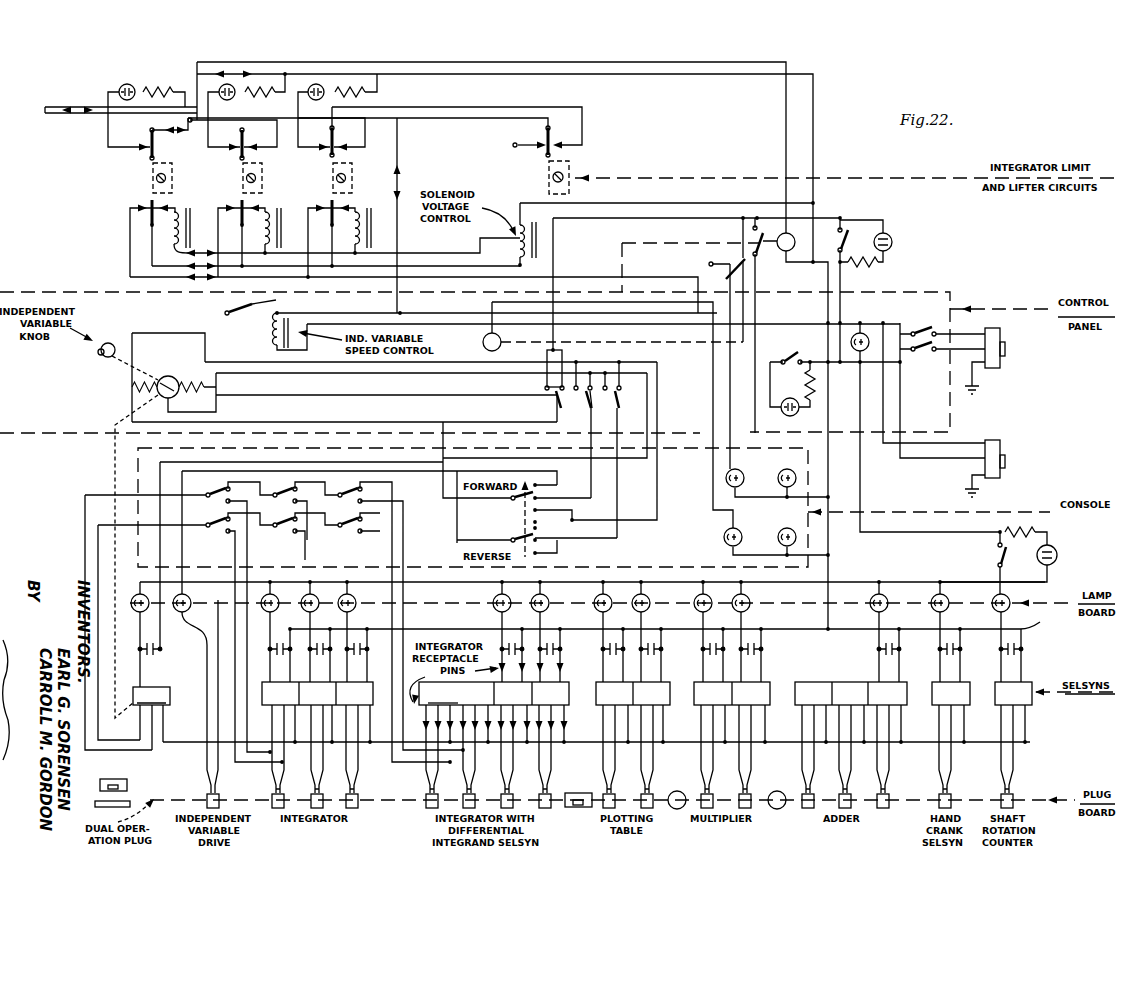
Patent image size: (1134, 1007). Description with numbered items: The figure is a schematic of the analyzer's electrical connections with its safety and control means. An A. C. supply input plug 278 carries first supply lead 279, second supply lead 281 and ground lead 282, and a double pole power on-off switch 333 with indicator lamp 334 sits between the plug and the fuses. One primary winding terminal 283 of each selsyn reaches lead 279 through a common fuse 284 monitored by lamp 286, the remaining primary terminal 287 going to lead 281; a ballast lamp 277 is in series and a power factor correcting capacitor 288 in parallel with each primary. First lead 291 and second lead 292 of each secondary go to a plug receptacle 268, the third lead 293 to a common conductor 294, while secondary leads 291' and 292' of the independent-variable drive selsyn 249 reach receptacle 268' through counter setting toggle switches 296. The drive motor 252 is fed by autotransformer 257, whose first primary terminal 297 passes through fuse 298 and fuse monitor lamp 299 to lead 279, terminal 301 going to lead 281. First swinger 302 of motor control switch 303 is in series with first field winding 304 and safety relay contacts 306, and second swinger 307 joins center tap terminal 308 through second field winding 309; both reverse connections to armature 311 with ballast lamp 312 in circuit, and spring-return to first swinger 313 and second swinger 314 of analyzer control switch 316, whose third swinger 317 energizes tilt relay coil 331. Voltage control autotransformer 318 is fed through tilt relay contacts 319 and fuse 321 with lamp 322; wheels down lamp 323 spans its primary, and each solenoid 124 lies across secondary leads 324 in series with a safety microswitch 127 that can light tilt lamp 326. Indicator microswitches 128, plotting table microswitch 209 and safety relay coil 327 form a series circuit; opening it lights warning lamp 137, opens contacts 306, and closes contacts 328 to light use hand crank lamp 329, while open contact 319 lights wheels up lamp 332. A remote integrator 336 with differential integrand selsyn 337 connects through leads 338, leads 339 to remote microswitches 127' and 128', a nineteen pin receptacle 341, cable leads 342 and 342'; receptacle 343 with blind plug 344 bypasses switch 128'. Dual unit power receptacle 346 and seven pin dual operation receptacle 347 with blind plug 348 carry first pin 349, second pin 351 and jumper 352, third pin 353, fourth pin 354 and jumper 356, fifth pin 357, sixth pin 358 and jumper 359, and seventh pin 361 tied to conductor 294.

The solenoid 124 is at (350, 200).
The safety microswitch 127 is at (294, 231).
The remote microswitch 127' is at (135, 230).
The indicator microswitch 128 is at (253, 142).
The remote indicator microswitch 128' is at (131, 142).
The warning lamp 137 is at (233, 97).
The plotting table microswitch 209 is at (576, 164).
The independent-variable drive selsyn 249 is at (127, 622).
The independent-variable drive motor 252 is at (126, 394).
The autotransformer 257 is at (300, 363).
The plug receptacle 268 is at (663, 756).
The plug receptacle 268' is at (185, 773).
The ballast lamp 277 is at (752, 601).
The A. C. supply input plug 278 is at (1005, 352).
The first supply lead 279 is at (1000, 335).
The second supply lead 281 is at (985, 330).
The ground lead 282 is at (985, 372).
The primary winding terminal 283 is at (940, 580).
The common fuse 284 is at (997, 548).
The lamp 286 is at (1053, 548).
The primary winding terminal 287 is at (963, 621).
The power factor correcting capacitor 288 is at (953, 656).
The first lead 291 is at (1034, 743).
The secondary lead 291' is at (190, 676).
The second lead 292 is at (596, 745).
The secondary lead 292' is at (190, 711).
The third lead 293 is at (1030, 722).
The common conductor 294 is at (997, 740).
The counter setting toggle switch 296 is at (364, 484).
The first primary terminal 297 is at (280, 312).
The fuse 298 is at (784, 358).
The fuse monitor lamp 299 is at (796, 415).
The primary terminal 301 is at (277, 350).
The first swinger 302 is at (537, 540).
The motor control switch 303 is at (503, 520).
The first drive motor field winding 304 is at (205, 387).
The safety relay contacts 306 is at (226, 316).
The second swinger 307 is at (513, 500).
The center tap terminal 308 is at (266, 330).
The second field winding 309 is at (145, 390).
The drive motor armature 311 is at (164, 375).
The ballast lamp 312 is at (206, 638).
The first swinger 313 is at (622, 395).
The second swinger 314 is at (620, 402).
The analyzer control switch 316 is at (600, 356).
The third swinger 317 is at (555, 394).
The voltage control autotransformer 318 is at (540, 241).
The tilt relay contacts 319 is at (740, 265).
The fuse 321 is at (845, 228).
The lamp 322 is at (892, 240).
The wheels down indicator lamp 323 is at (724, 537).
The secondary leads 324 is at (470, 262).
The tilt indicator lamp 326 is at (780, 532).
The safety relay coil 327 is at (778, 250).
The relay contacts 328 is at (790, 203).
The use hand crank indicator lamp 329 is at (782, 484).
The tilt relay coil 331 is at (488, 352).
The wheels up indicator lamp 332 is at (726, 478).
The power on-off switch 333 is at (934, 352).
The power on-off indicator lamp 334 is at (860, 332).
The remote integrator unit 336 is at (500, 644).
The differential integrand selsyn 337 is at (494, 693).
The leads 338 is at (520, 654).
The leads 339 is at (150, 150).
The nineteen pin plug receptacle 341 is at (610, 808).
The lead 342 is at (379, 372).
The leads 342' is at (549, 766).
The two conductor plug receptacle 343 is at (78, 92).
The two-pin blind plug 344 is at (70, 108).
The dual unit power supply plug receptacle 346 is at (1002, 460).
The dual operation plug receptacle 347 is at (103, 760).
The blind plug 348 is at (126, 800).
The first pin 349 is at (398, 195).
The second pin 351 is at (398, 162).
The pin jumper 352 is at (398, 178).
The third pin 353 is at (784, 112).
The fourth pin 354 is at (784, 140).
The pin jumper 356 is at (786, 127).
The fifth pin 357 is at (510, 420).
The sixth pin 358 is at (538, 420).
The jumper 359 is at (510, 424).
The seventh pin 361 is at (1050, 742).